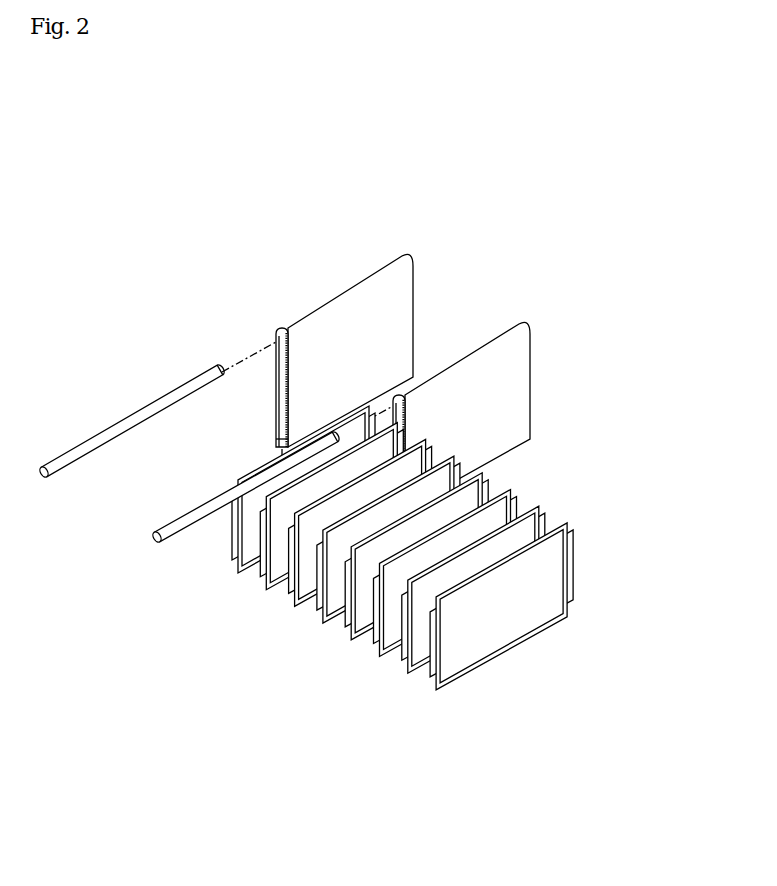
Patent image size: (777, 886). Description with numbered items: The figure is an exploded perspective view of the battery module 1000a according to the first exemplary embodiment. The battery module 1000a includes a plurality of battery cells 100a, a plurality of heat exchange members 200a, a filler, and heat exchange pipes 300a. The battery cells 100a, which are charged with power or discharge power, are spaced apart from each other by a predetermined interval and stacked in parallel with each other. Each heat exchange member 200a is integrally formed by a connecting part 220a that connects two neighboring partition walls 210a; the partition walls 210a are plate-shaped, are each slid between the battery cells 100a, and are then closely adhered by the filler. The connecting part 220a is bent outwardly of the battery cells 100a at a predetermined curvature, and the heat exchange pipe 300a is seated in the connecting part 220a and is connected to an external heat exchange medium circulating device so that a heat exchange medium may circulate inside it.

The battery module 1000a is at (490, 138).
The battery cell 100a is at (369, 653).
The heat exchange member 200a is at (273, 228).
The partition wall 210a is at (277, 372).
The connecting part 220a is at (345, 298).
The heat exchange pipe 300a is at (119, 422).